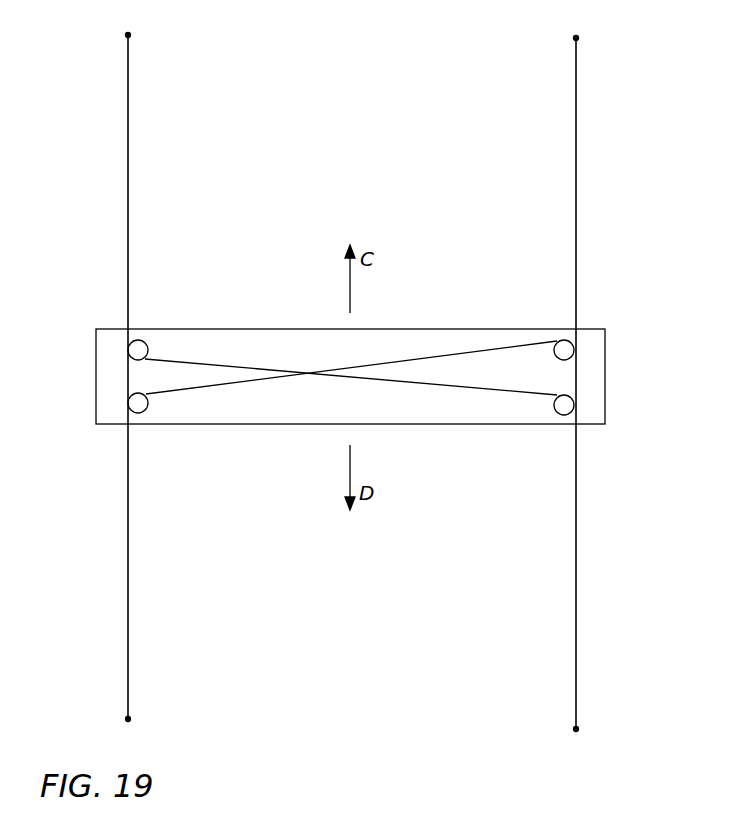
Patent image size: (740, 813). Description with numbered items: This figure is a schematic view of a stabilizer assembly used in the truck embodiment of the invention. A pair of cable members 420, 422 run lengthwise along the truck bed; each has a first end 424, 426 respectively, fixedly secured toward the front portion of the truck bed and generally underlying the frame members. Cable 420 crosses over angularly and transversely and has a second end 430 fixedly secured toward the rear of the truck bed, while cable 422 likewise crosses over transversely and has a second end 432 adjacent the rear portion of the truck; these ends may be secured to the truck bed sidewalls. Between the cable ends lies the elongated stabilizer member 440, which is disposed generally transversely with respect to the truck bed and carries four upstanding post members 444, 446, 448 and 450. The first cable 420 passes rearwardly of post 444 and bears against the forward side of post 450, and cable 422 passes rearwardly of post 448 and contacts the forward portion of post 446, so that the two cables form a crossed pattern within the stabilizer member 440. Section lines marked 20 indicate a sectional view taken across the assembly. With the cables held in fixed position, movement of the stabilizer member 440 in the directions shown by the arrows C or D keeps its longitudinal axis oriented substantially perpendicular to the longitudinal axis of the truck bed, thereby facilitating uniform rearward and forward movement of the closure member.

The section line 20 is at (105, 315).
The cable member 420 is at (128, 156).
The cable member 422 is at (576, 138).
The first end 424 is at (128, 35).
The first end 426 is at (576, 38).
The second end 430 is at (576, 729).
The second end 432 is at (128, 719).
The stabilizer member 440 is at (390, 329).
The post member 444 is at (145, 348).
The post member 446 is at (143, 410).
The post member 448 is at (561, 346).
The post member 450 is at (558, 408).